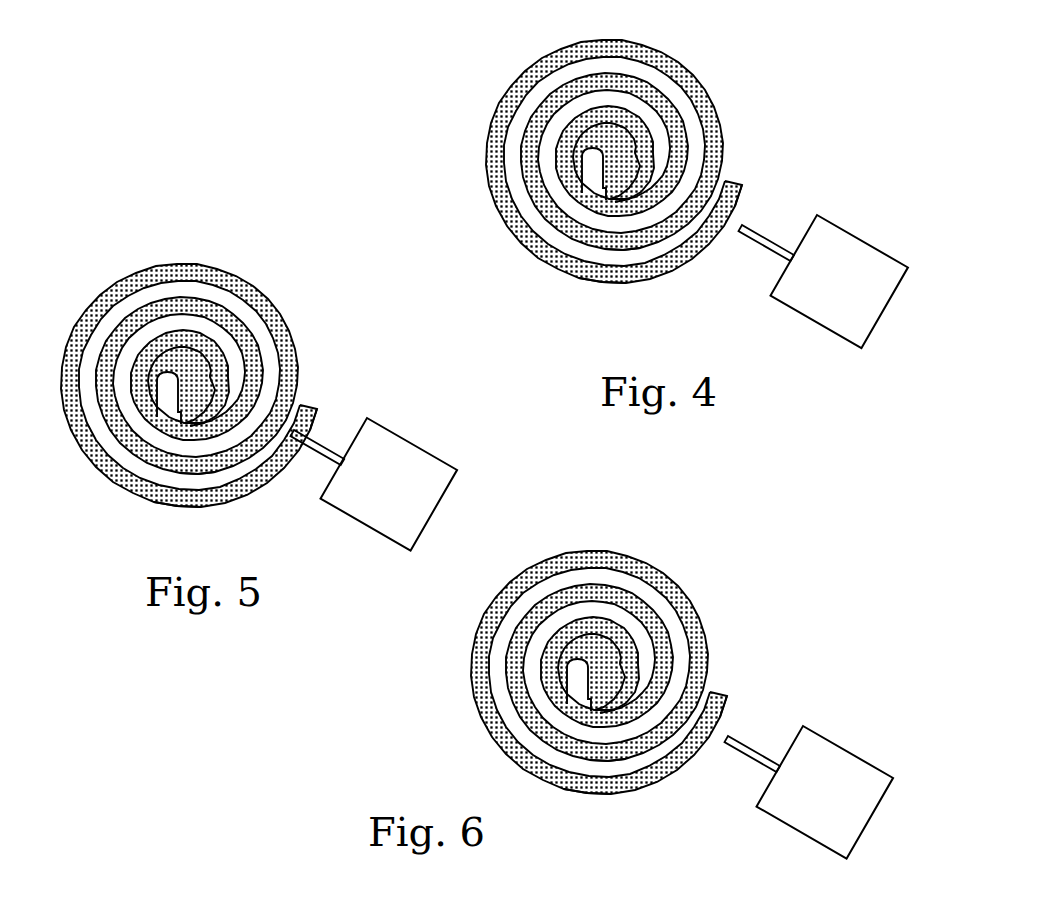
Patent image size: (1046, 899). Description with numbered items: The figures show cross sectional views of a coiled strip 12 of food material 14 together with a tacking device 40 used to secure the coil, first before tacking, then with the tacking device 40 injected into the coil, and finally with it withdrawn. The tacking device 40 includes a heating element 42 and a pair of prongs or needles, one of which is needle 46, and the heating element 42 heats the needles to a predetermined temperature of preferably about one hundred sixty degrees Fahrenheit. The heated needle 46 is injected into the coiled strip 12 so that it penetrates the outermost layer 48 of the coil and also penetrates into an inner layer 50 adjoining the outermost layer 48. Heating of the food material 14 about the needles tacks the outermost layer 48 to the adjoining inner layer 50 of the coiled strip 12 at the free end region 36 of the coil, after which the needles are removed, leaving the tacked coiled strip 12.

In FIG. 4, the coiled strip 12 is at (690, 86).
In FIG. 5, the coiled strip 12 is at (175, 288).
In FIG. 6, the coiled strip 12 is at (608, 583).
In FIG. 4, the food material 14 is at (594, 161).
In FIG. 5, the food material 14 is at (173, 356).
In FIG. 6, the food material 14 is at (598, 635).
In FIG. 4, the terminal tab 36 is at (742, 198).
In FIG. 5, the terminal tab 36 is at (318, 430).
In FIG. 6, the terminal tab 36 is at (725, 712).
In FIG. 4, the tacking device 40 is at (839, 293).
In FIG. 5, the tacking device 40 is at (389, 479).
In FIG. 6, the tacking device 40 is at (830, 762).
In FIG. 4, the heating element 42 is at (839, 316).
In FIG. 5, the heating element 42 is at (407, 523).
In FIG. 6, the heating element 42 is at (845, 824).
In FIG. 4, the needle 46 is at (762, 243).
In FIG. 5, the needle 46 is at (325, 458).
In FIG. 6, the needle 46 is at (755, 760).
In FIG. 4, the outermost layer 48 is at (622, 281).
In FIG. 5, the outermost layer 48 is at (312, 403).
In FIG. 6, the outermost layer 48 is at (624, 790).
In FIG. 4, the inner layer 50 is at (597, 268).
In FIG. 5, the inner layer 50 is at (193, 483).
In FIG. 6, the inner layer 50 is at (596, 770).